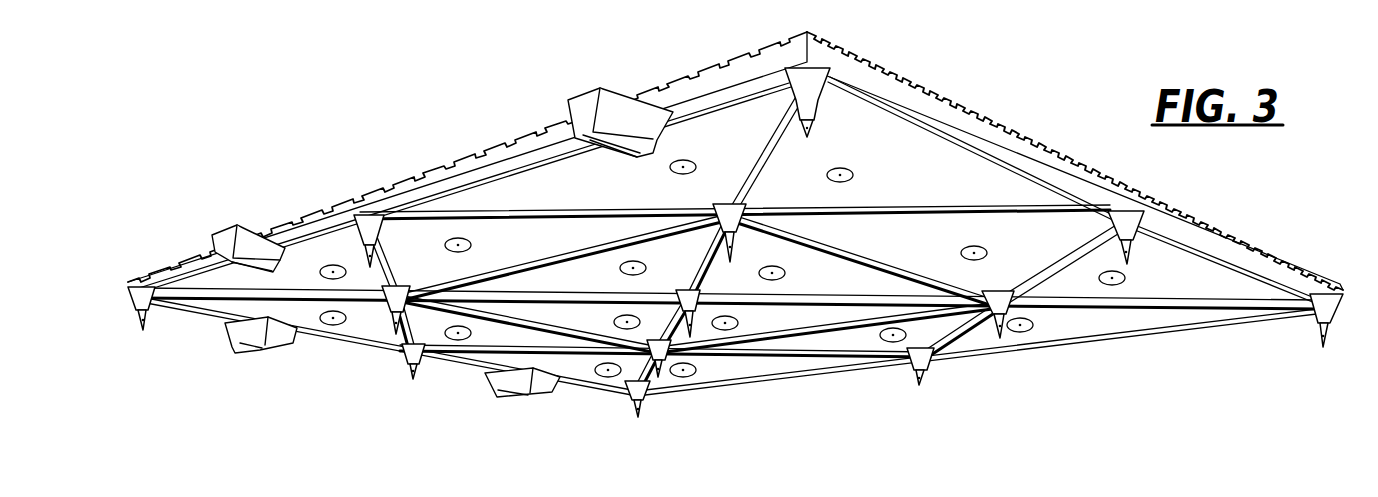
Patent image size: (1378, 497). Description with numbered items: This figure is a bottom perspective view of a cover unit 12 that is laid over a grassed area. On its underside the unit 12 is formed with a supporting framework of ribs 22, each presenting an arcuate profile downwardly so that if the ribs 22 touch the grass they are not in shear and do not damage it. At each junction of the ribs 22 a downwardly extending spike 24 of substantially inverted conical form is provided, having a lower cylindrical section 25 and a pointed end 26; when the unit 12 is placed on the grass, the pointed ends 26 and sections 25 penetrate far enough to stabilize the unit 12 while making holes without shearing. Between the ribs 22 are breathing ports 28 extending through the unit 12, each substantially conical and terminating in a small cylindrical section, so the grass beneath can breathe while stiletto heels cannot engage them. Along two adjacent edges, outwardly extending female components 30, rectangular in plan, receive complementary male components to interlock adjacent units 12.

The cover unit 12 is at (402, 160).
The ribs 22 is at (758, 151).
The spike 24 is at (380, 231).
The lower cylindrical section 25 is at (803, 116).
The pointed end 26 is at (809, 134).
The breathing port 28 is at (680, 170).
The female component 30 is at (610, 108).